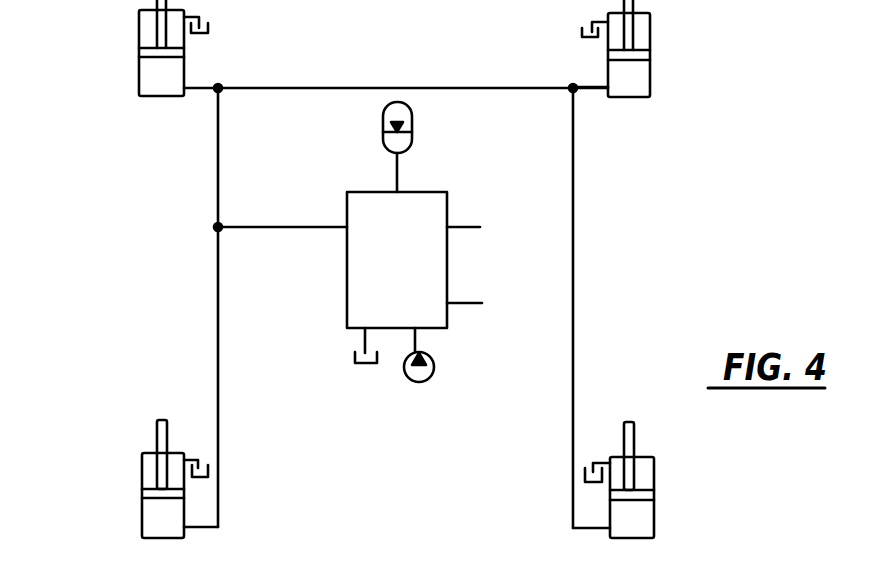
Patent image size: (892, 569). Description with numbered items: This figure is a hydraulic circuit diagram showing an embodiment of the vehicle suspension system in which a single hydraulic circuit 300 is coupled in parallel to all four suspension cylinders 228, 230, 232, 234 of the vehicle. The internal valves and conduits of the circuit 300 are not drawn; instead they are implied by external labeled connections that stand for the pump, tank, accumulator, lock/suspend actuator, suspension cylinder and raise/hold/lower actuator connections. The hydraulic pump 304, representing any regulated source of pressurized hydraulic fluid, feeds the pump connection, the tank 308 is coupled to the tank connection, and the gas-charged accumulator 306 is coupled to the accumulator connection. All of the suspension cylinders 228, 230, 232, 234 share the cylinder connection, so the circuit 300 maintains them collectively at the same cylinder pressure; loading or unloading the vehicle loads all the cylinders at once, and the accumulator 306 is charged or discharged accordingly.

The suspension cylinder 228 is at (139, 37).
The suspension cylinder 230 is at (142, 517).
The suspension cylinder 232 is at (650, 40).
The suspension cylinder 234 is at (654, 522).
The hydraulic circuit 300 is at (421, 256).
The hydraulic pump 304 is at (434, 370).
The gas-charged accumulator 306 is at (412, 122).
The tank 308 is at (353, 354).